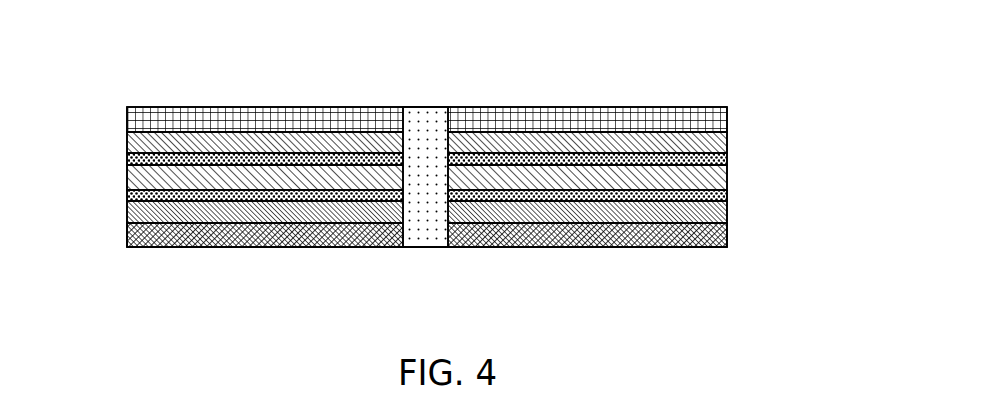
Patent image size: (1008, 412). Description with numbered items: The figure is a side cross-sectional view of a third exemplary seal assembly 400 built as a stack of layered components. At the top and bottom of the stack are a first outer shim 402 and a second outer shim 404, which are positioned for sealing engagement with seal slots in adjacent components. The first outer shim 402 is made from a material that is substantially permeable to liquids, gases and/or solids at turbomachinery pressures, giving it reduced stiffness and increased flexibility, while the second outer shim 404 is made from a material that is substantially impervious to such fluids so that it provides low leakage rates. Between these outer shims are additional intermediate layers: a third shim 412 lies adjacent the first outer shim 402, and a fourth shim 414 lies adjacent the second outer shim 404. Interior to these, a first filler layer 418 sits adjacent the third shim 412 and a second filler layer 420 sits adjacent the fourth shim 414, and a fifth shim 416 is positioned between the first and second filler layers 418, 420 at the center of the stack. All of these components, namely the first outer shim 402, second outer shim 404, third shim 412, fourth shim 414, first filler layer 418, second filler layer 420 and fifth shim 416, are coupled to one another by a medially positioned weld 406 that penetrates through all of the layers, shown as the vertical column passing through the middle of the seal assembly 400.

The seal assembly 400 is at (158, 58).
The first outer shim 402 is at (641, 107).
The second outer shim 404 is at (628, 247).
The medial weld 406 is at (424, 107).
The third shim 412 is at (727, 140).
The fourth shim 414 is at (727, 212).
The fifth shim 416 is at (727, 175).
The first filler layer 418 is at (126, 160).
The second filler layer 420 is at (126, 195).